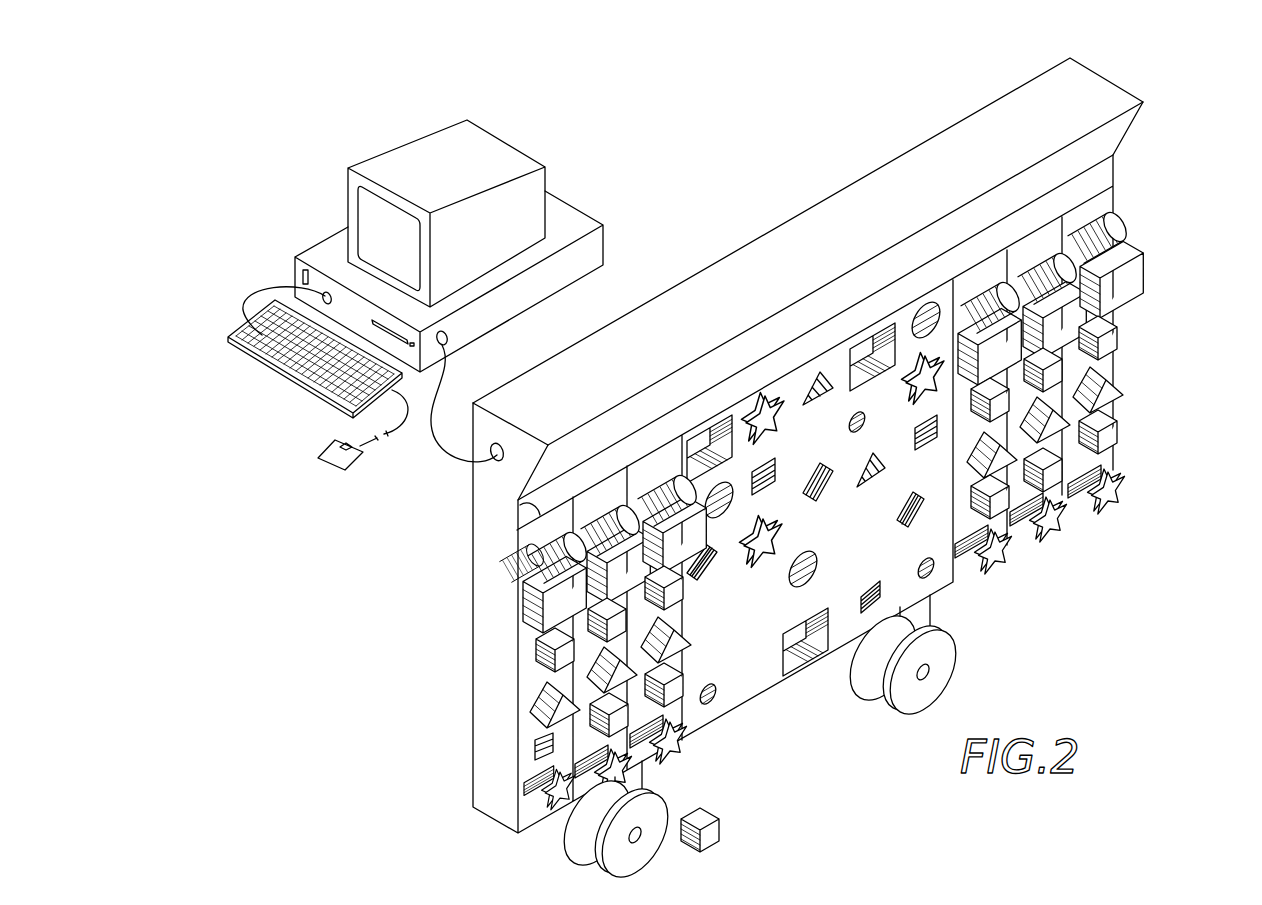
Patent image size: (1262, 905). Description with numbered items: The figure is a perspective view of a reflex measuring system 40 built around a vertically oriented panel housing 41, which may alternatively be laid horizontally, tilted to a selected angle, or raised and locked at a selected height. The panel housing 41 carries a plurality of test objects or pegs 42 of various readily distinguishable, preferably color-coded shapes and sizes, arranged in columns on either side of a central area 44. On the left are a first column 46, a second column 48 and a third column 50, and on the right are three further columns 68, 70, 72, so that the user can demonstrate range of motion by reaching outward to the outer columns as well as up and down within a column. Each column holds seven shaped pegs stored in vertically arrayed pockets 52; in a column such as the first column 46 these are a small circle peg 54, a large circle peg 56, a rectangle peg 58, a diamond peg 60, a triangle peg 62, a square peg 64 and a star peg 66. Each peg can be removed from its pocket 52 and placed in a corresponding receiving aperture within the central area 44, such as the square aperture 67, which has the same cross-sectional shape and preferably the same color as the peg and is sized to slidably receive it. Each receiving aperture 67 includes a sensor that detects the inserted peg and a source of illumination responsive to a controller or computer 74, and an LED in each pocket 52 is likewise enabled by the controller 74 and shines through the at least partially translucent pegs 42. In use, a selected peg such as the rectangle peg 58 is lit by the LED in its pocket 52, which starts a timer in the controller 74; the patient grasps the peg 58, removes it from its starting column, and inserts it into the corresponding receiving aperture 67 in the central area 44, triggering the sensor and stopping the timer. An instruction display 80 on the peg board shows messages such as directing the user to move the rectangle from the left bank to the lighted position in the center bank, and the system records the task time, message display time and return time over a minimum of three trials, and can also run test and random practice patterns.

The reflex measuring system 40 is at (1165, 358).
The panel housing 41 is at (1113, 70).
The test objects or pegs 42 is at (557, 839).
The central area 44 is at (905, 578).
The first column 46 is at (540, 533).
The second column 48 is at (598, 500).
The third column 50 is at (645, 465).
The pocket 52 is at (540, 760).
The small circle peg 54 is at (525, 548).
The large circle peg 56 is at (545, 512).
The rectangle peg 58 is at (553, 605).
The diamond peg 60 is at (562, 665).
The triangle peg 62 is at (565, 738).
The square peg 64 is at (712, 817).
The star peg 66 is at (568, 815).
The square aperture 67 is at (860, 600).
The column 68 is at (968, 280).
The column 70 is at (1027, 250).
The column 72 is at (1080, 215).
The controller or computer 74 is at (593, 201).
The instruction display 80 is at (875, 300).